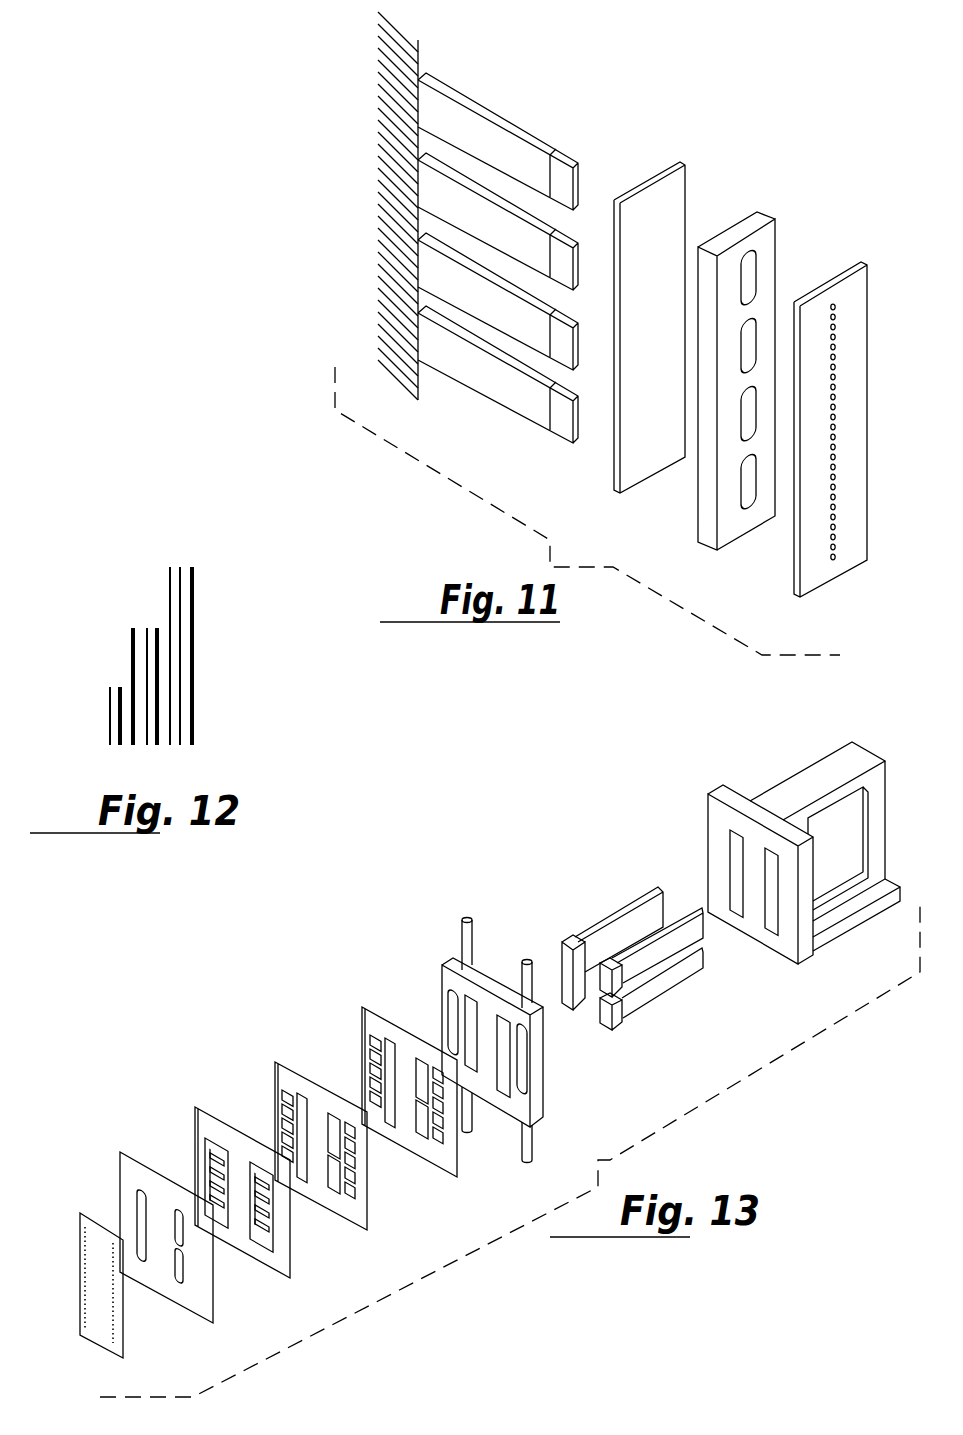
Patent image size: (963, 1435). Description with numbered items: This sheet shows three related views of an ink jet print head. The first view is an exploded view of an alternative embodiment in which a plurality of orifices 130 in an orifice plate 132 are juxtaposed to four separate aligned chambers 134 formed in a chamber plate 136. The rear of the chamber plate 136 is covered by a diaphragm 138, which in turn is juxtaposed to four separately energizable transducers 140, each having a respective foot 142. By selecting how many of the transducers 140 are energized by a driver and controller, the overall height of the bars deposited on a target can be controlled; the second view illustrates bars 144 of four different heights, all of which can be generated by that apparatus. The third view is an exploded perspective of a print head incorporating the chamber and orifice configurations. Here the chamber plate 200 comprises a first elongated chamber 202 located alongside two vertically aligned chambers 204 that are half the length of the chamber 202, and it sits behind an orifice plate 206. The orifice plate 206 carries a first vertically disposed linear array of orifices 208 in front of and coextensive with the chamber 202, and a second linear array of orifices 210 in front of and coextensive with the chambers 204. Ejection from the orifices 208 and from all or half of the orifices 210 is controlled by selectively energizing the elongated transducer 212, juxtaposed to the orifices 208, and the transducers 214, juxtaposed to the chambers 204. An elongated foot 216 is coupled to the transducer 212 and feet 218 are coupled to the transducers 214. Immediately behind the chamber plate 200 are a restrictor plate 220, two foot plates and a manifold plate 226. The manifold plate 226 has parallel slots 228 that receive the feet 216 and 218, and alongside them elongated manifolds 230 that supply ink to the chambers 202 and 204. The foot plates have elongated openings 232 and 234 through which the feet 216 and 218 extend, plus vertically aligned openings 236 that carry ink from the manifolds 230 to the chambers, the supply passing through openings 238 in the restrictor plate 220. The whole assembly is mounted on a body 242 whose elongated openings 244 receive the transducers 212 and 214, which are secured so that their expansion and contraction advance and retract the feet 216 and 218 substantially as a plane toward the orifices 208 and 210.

In FIG. 11, the orifices 130 is at (833, 542).
In FIG. 11, the orifice plate 132 is at (850, 293).
In FIG. 11, the chambers 134 is at (757, 323).
In FIG. 11, the chamber plate 136 is at (728, 235).
In FIG. 11, the diaphragm 138 is at (660, 198).
In FIG. 11, the transducers 140 is at (458, 202).
In FIG. 11, the feet 142 is at (570, 238).
In FIG. 12, the bars 144 is at (203, 563).
In FIG. 13, the chamber plate 200 is at (198, 1305).
In FIG. 13, the first elongated chamber 202 is at (138, 1198).
In FIG. 13, the vertically aligned chambers 204 is at (178, 1280).
In FIG. 13, the orifice plate 206 is at (79, 1238).
In FIG. 13, the first linear array of orifices 208 is at (85, 1280).
In FIG. 13, the second linear array of orifices 210 is at (115, 1313).
In FIG. 13, the elongated transducer 212 is at (633, 918).
In FIG. 13, the transducers 214 is at (667, 947).
In FIG. 13, the elongated foot 216 is at (563, 960).
In FIG. 13, the feet 218 is at (620, 980).
In FIG. 13, the restrictor plate 220 is at (280, 1255).
In FIG. 13, the manifold plate 226 is at (542, 1093).
In FIG. 13, the slots 228 is at (505, 1028).
In FIG. 13, the manifolds 230 is at (450, 1000).
In FIG. 13, the elongated openings 232 is at (397, 1050).
In FIG. 13, the elongated openings 234 is at (260, 1168).
In FIG. 13, the openings 236 is at (377, 1060).
In FIG. 13, the openings 238 is at (208, 1145).
In FIG. 13, the body 242 is at (812, 938).
In FIG. 13, the elongated openings 244 is at (768, 885).